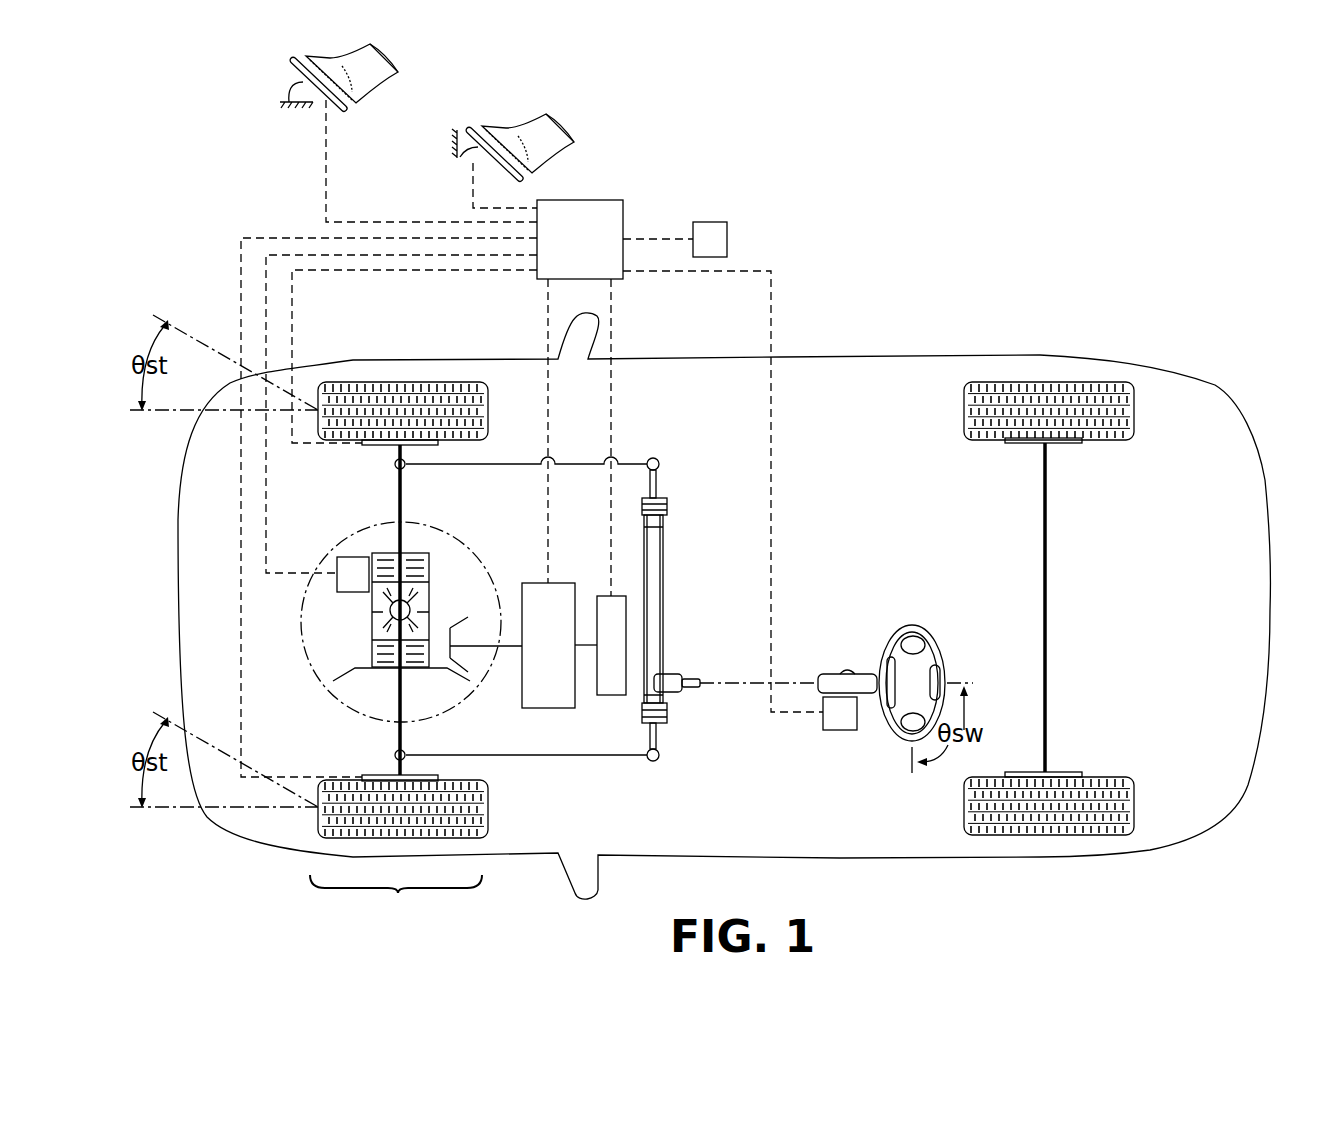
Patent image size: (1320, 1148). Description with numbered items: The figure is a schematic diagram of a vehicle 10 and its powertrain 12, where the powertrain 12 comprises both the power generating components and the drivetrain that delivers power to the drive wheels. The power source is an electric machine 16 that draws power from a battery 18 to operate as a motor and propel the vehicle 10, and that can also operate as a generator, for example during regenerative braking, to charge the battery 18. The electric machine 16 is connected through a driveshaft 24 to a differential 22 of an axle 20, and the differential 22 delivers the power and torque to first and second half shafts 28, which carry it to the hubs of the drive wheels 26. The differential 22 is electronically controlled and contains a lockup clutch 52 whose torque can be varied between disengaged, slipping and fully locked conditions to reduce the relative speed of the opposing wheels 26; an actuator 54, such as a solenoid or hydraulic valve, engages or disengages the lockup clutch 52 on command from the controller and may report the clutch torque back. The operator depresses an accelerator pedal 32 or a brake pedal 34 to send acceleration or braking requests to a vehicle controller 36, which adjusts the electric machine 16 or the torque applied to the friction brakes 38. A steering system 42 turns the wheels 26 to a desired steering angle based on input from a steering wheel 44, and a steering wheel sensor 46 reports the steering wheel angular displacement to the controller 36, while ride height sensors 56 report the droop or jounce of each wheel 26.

The vehicle 10 is at (935, 118).
The powertrain 12 is at (642, 432).
The electric machine 16 is at (548, 708).
The battery 18 is at (610, 695).
The axle 20 is at (396, 901).
The differential 22 is at (322, 707).
The driveshaft 24 is at (512, 645).
The drive wheels 26 is at (490, 410).
The half shafts 28 is at (400, 533).
The accelerator pedal 32 is at (305, 85).
The brake pedal 34 is at (466, 160).
The vehicle controller 36 is at (580, 200).
The friction brakes 38 is at (430, 446).
The steering system 42 is at (665, 600).
The steering wheel 44 is at (912, 623).
The steering wheel sensor 46 is at (840, 730).
The lockup clutch 52 is at (373, 651).
The actuator 54 is at (352, 557).
The ride height sensors 56 is at (710, 222).